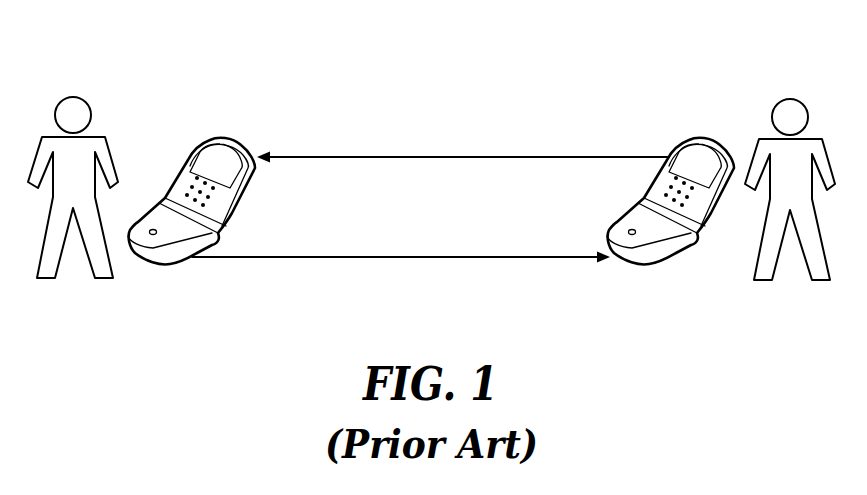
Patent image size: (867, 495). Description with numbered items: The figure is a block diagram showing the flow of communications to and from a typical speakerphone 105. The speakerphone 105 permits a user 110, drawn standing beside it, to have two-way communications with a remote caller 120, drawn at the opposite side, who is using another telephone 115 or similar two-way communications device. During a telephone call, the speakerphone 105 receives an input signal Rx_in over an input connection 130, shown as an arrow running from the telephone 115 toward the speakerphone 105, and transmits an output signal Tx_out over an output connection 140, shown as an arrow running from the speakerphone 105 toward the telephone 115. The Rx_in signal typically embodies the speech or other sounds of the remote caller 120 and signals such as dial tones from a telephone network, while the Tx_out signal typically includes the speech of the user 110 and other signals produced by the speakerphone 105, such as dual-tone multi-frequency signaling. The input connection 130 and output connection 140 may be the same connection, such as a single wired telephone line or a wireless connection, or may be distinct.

The speakerphone 105 is at (220, 138).
The user 110 is at (75, 98).
The telephone 115 is at (698, 140).
The remote caller 120 is at (790, 100).
The input connection 130 is at (445, 158).
The output connection 140 is at (475, 257).